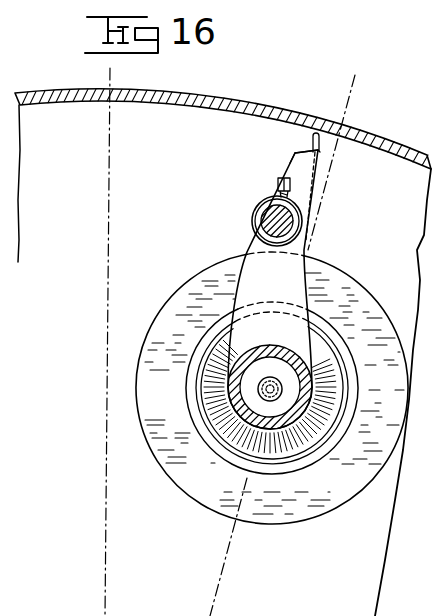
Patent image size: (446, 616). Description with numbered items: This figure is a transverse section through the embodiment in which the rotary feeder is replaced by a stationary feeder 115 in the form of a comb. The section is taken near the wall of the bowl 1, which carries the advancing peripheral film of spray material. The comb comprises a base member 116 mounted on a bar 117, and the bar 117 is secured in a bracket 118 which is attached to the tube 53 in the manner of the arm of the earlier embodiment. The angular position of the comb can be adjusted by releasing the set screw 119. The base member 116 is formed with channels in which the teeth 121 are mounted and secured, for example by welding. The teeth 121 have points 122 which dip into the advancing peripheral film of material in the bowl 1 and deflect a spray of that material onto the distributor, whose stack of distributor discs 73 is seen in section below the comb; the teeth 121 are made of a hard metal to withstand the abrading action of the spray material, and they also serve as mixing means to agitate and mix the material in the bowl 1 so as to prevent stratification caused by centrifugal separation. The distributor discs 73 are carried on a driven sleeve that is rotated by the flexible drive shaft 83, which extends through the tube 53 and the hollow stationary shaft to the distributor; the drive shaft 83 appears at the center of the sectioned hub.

The bowl 1 is at (396, 133).
The tube 53 is at (233, 386).
The distributor disc 73 is at (296, 518).
The flexible drive shaft 83 is at (271, 401).
The stationary feeder 115 is at (290, 158).
The base member 116 is at (290, 163).
The bar 117 is at (262, 225).
The bracket 118 is at (273, 289).
The set screw 119 is at (276, 183).
The teeth 121 is at (320, 152).
The points 122 is at (312, 135).